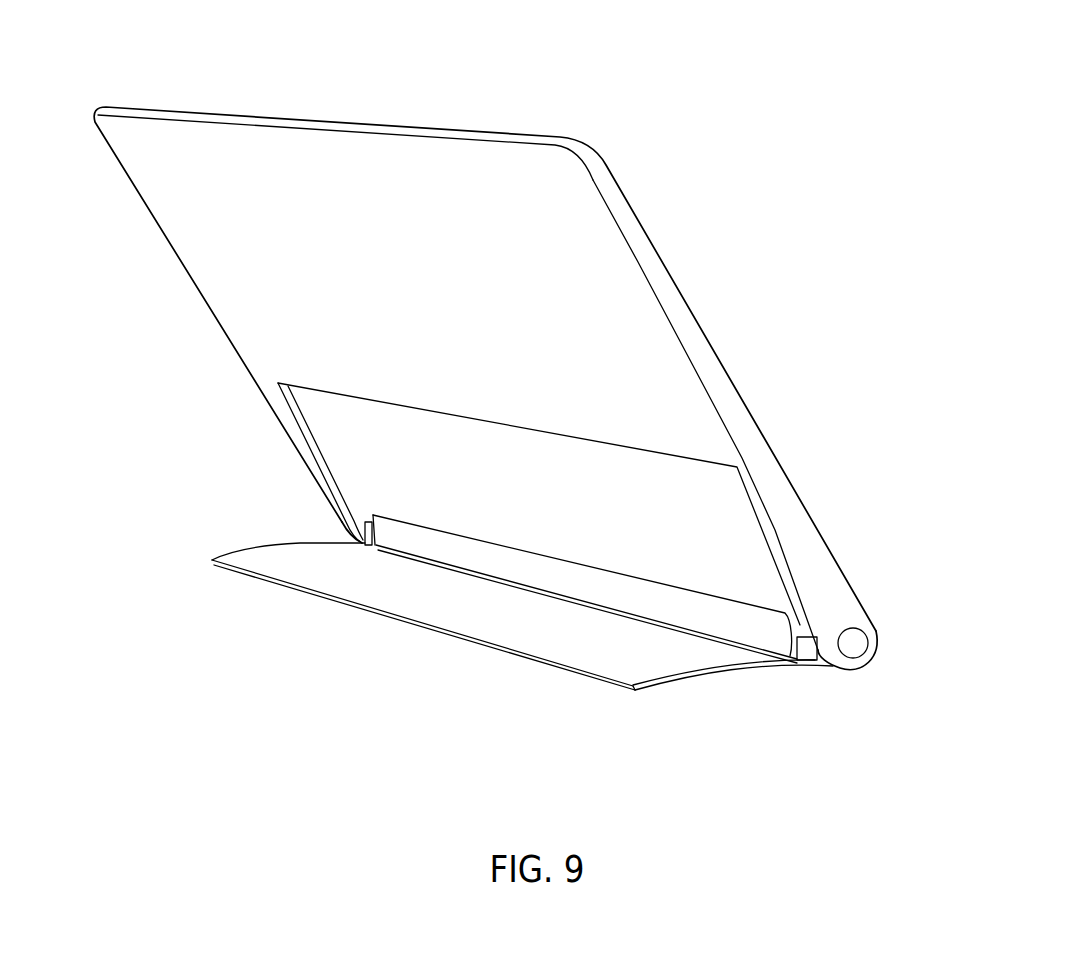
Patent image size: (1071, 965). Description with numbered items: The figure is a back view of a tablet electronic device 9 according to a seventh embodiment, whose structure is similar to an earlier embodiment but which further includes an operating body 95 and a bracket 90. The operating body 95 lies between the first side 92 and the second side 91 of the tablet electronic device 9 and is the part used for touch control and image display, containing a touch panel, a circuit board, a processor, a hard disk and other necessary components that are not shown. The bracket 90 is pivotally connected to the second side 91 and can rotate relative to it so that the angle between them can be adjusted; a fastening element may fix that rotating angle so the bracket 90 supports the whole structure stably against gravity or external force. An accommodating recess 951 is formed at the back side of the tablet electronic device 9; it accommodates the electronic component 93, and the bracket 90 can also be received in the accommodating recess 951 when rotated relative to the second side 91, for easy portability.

The tablet electronic device 9 is at (703, 108).
The first side 92 is at (490, 132).
The operating body 95 is at (712, 350).
The accommodating recess 951 is at (722, 508).
The second side 91 is at (875, 657).
The electronic component 93 is at (713, 617).
The bracket 90 is at (527, 635).